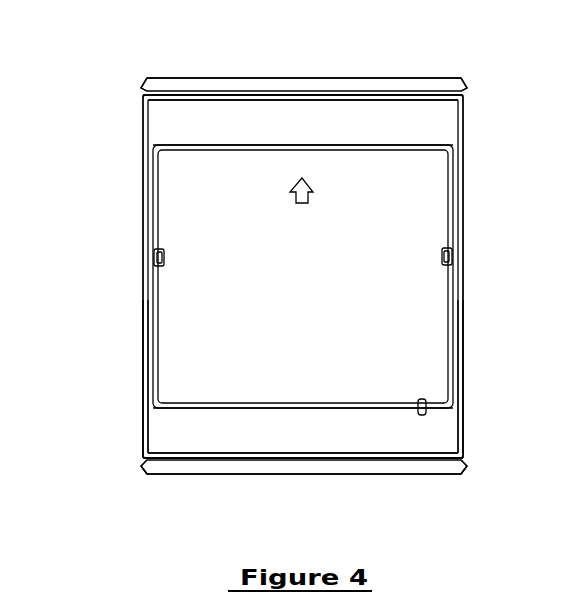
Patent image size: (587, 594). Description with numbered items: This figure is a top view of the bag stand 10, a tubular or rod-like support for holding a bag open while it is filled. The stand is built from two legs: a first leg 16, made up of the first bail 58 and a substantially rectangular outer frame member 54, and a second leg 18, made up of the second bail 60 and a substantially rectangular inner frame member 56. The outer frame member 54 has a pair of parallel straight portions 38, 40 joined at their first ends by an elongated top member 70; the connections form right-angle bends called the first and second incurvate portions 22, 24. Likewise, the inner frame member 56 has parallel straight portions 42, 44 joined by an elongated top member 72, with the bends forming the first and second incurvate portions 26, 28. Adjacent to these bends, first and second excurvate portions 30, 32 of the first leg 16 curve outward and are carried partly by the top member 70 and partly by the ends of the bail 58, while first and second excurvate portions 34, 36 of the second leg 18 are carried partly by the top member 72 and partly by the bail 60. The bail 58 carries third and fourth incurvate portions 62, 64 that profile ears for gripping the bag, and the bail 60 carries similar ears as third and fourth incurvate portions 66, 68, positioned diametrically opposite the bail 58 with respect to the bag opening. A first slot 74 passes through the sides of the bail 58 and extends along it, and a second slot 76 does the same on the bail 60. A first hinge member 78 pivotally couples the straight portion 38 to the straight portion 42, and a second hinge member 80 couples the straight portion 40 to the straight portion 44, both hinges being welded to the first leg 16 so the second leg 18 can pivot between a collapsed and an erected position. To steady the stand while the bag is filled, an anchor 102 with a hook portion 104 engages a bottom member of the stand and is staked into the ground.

The bag stand 10 is at (522, 72).
The first leg 16 is at (130, 127).
The second leg 18 is at (128, 428).
The first incurvate portion 22 is at (143, 96).
The second incurvate portion 24 is at (463, 100).
The first incurvate portion 26 is at (152, 452).
The second incurvate portion 28 is at (455, 455).
The first excurvate portion 30 is at (141, 88).
The second excurvate portion 32 is at (472, 88).
The first excurvate portion 34 is at (136, 464).
The second excurvate portion 36 is at (470, 466).
The straight portion 38 is at (150, 120).
The straight portion 40 is at (463, 125).
The straight portion 42 is at (143, 416).
The straight portion 44 is at (463, 420).
The outer frame member 54 is at (130, 143).
The inner frame member 56 is at (130, 443).
The first bail 58 is at (355, 78).
The second bail 60 is at (355, 474).
The third incurvate portion 62 is at (141, 86).
The fourth incurvate portion 64 is at (460, 78).
The third incurvate portion 66 is at (143, 470).
The fourth incurvate portion 68 is at (467, 470).
The top member 70 is at (312, 100).
The top member 72 is at (320, 452).
The first slot 74 is at (190, 84).
The second slot 76 is at (245, 475).
The first hinge member 78 is at (171, 279).
The second hinge member 80 is at (436, 281).
The anchor 102 is at (305, 202).
The hook portion 104 is at (422, 398).